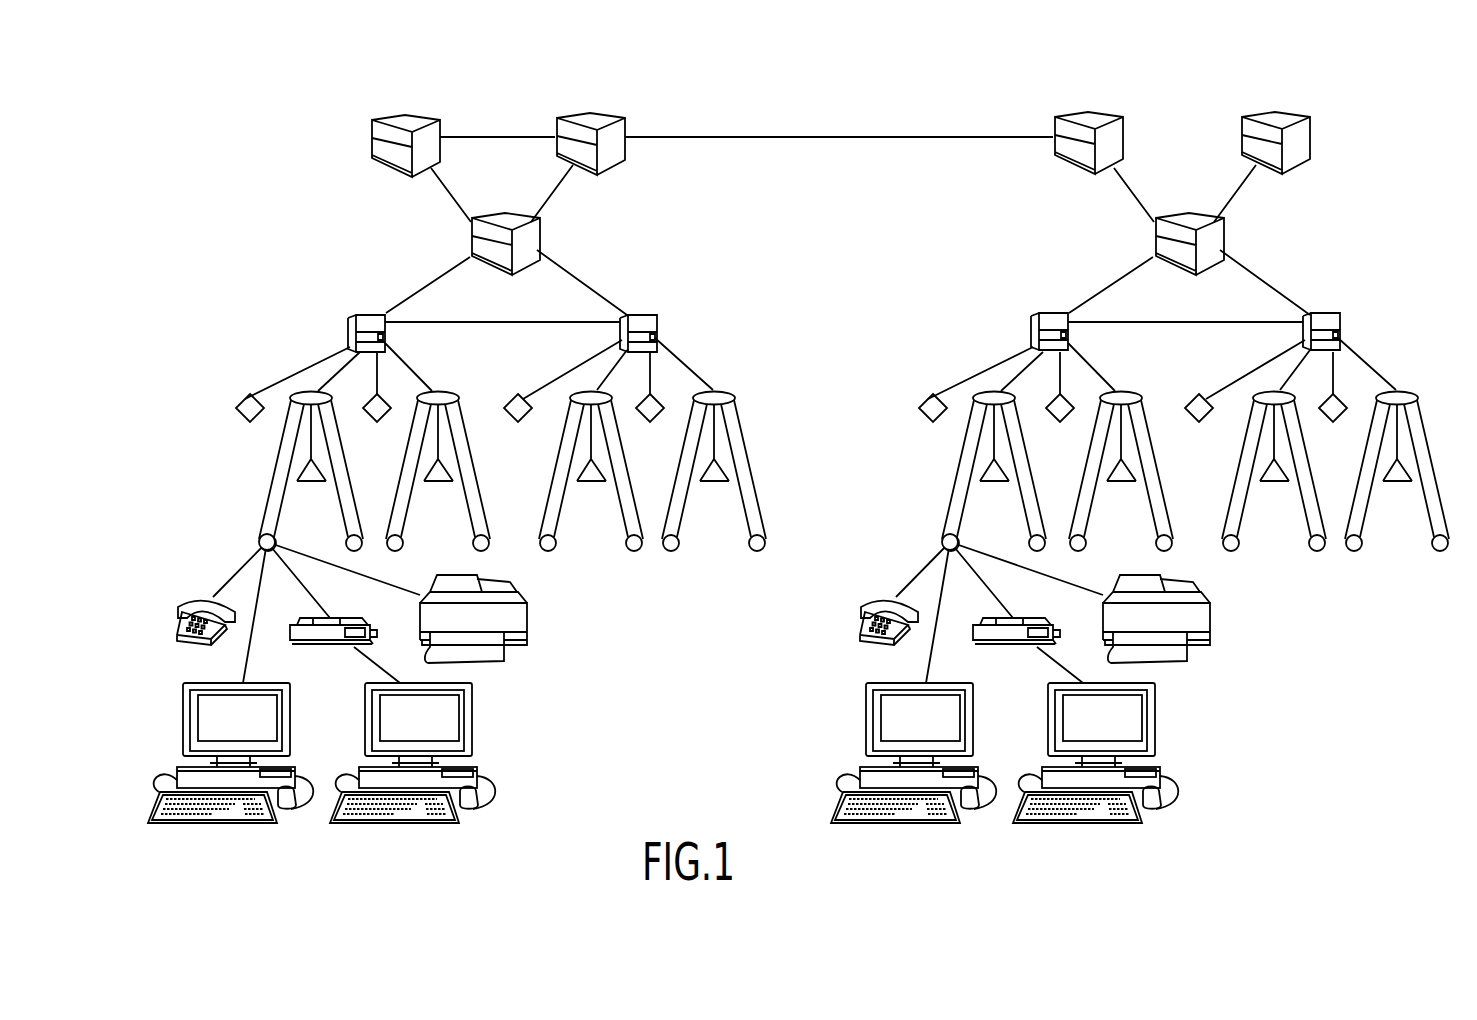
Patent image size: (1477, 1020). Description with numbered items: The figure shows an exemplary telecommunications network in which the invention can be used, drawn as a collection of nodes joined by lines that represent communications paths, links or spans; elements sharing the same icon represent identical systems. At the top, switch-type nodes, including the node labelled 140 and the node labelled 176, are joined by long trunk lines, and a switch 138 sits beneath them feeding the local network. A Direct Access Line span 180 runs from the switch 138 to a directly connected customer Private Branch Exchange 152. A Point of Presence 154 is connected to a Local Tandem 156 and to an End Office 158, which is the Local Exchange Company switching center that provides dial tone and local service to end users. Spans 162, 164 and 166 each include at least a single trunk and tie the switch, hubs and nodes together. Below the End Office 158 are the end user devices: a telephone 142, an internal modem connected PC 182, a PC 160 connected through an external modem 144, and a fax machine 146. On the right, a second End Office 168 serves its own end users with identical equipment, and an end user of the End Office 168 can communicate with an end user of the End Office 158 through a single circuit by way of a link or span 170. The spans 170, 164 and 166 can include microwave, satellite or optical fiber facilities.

The switch 138 is at (360, 315).
The host computer 140 is at (406, 113).
The telephone 142 is at (177, 611).
The external modem 144 is at (303, 648).
The fax machine 146 is at (530, 618).
The Private Branch Exchange 152 is at (240, 400).
The Point of Presence 154 is at (292, 418).
The Local Tandem 156 is at (305, 482).
The End Office 158 is at (261, 538).
The PC 160 is at (473, 728).
The span 162 is at (345, 356).
The span 164 is at (468, 325).
The span 166 is at (420, 283).
The End Office 168 is at (944, 537).
The span 170 is at (808, 137).
The host computer 176 is at (1080, 112).
The Direct Access Line span 180 is at (293, 364).
The internal modem connected PC 182 is at (183, 720).